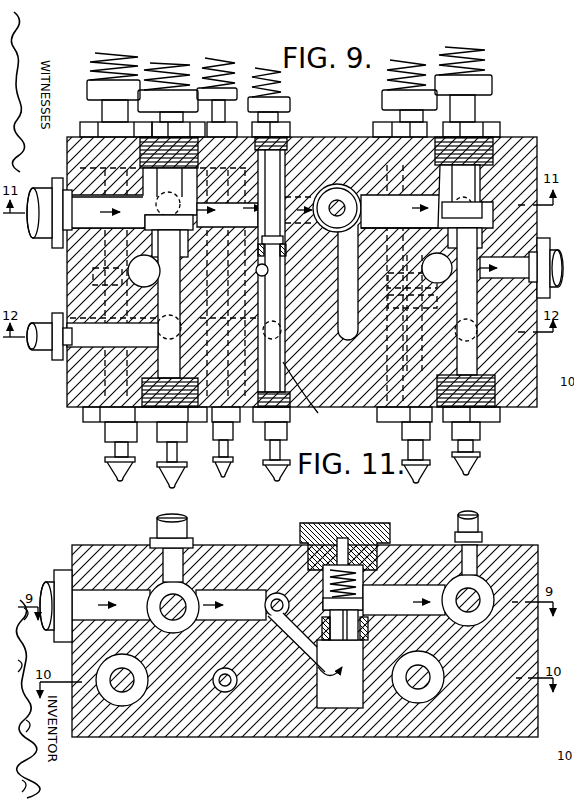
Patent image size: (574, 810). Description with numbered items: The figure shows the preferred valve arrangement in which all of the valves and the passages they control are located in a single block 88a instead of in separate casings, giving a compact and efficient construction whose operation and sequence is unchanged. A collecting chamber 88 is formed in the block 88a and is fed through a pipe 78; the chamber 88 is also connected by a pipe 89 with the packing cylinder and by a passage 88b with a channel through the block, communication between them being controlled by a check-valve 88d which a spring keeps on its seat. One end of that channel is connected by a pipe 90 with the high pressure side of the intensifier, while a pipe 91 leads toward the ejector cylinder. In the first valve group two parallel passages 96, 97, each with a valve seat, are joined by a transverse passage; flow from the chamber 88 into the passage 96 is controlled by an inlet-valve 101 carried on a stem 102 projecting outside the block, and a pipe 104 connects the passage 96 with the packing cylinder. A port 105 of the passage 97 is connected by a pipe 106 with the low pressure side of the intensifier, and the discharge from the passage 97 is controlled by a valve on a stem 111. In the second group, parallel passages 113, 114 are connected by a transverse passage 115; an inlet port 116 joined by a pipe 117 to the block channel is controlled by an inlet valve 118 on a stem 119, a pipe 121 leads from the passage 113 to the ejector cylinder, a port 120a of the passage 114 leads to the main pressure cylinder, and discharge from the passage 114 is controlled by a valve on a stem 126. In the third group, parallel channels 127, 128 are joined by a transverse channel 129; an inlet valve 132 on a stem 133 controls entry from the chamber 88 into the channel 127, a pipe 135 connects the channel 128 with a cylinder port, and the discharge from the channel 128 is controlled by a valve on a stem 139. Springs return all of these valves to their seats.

In FIG. 9, the pipe 78 is at (44, 200).
In FIG. 11, the pipe 78 is at (50, 588).
In FIG. 9, the collecting chamber 88 is at (164, 212).
In FIG. 11, the collecting chamber 88 is at (169, 605).
In FIG. 9, the block 88a is at (337, 208).
In FIG. 11, the passage 88b is at (343, 690).
In FIG. 11, the check-valve 88d is at (336, 661).
In FIG. 9, the pipe 89 is at (168, 200).
In FIG. 11, the pipe 89 is at (171, 514).
In FIG. 9, the pipe 90 is at (348, 324).
In FIG. 9, the pipe 91 is at (463, 202).
In FIG. 11, the pipe 91 is at (470, 512).
In FIG. 9, the passage 96 is at (170, 381).
In FIG. 11, the passage 96 is at (187, 590).
In FIG. 11, the passage 97 is at (123, 702).
In FIG. 9, the inlet-valve 101 is at (169, 223).
In FIG. 9, the stem 102 is at (172, 456).
In FIG. 9, the pipe 104 is at (169, 318).
In FIG. 9, the port 105 is at (113, 301).
In FIG. 9, the pipe 106 is at (45, 330).
In FIG. 9, the stem 111 is at (116, 449).
In FIG. 9, the passage 113 is at (484, 353).
In FIG. 11, the passage 113 is at (485, 580).
In FIG. 11, the passage 114 is at (419, 700).
In FIG. 9, the transverse passage 115 is at (437, 268).
In FIG. 9, the inlet port 116 is at (400, 211).
In FIG. 11, the inlet port 116 is at (404, 600).
In FIG. 9, the pipe 117 is at (399, 219).
In FIG. 11, the pipe 117 is at (365, 589).
In FIG. 9, the inlet valve 118 is at (482, 212).
In FIG. 9, the stem 119 is at (466, 447).
In FIG. 9, the port 120a is at (521, 268).
In FIG. 9, the pipe 121 is at (466, 325).
In FIG. 9, the stem 126 is at (418, 450).
In FIG. 9, the channel 127 is at (315, 396).
In FIG. 11, the channel 127 is at (272, 590).
In FIG. 11, the channel 128 is at (226, 692).
In FIG. 9, the transverse channel 129 is at (268, 270).
In FIG. 9, the inlet valve 132 is at (266, 240).
In FIG. 9, the stem 133 is at (280, 452).
In FIG. 9, the pipe 135 is at (281, 330).
In FIG. 9, the stem 139 is at (228, 452).